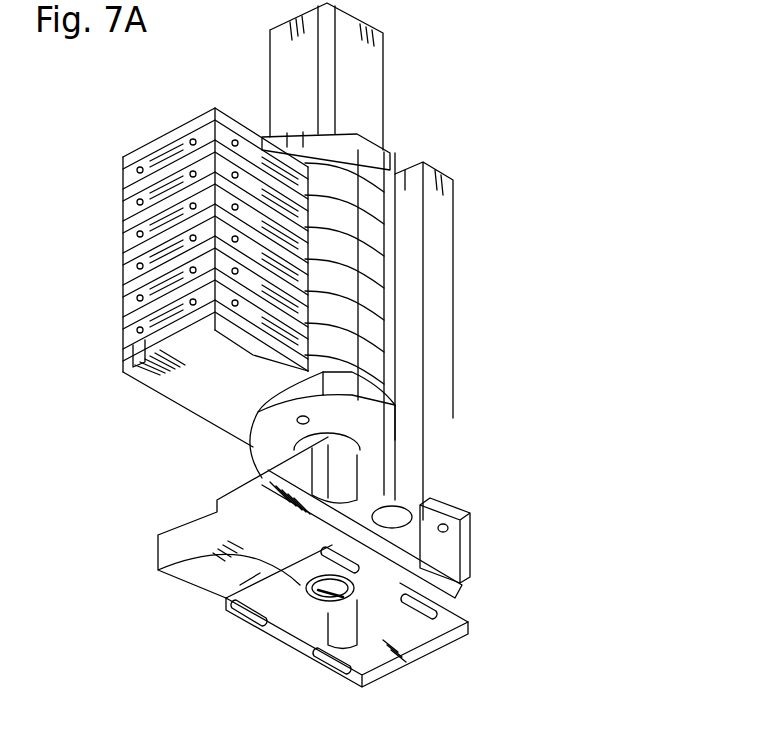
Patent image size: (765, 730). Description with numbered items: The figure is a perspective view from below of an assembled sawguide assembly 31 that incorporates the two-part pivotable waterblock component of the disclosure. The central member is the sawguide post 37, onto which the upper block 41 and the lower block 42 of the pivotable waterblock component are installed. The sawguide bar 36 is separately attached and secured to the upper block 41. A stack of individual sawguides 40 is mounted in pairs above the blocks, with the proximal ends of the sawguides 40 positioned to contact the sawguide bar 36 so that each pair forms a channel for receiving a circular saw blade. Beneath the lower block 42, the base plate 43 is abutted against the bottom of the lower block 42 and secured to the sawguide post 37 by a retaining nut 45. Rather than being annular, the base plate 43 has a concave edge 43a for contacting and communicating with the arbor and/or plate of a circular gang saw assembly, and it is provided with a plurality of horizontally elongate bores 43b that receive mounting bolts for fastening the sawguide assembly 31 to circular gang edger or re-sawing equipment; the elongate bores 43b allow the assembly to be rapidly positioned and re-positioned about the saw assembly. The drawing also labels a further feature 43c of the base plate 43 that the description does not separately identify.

The sawguide assembly 31 is at (620, 8).
The sawguide bar 36 is at (455, 417).
The sawguide post 37 is at (372, 648).
The sawguides 40 is at (180, 407).
The upper block 41 is at (463, 537).
The lower block 42 is at (473, 573).
The base plate 43 is at (480, 593).
The concave edge 43a is at (190, 529).
The horizontally elongate bores 43b is at (470, 610).
The edge portion 43c is at (241, 585).
The retaining nut 45 is at (352, 600).